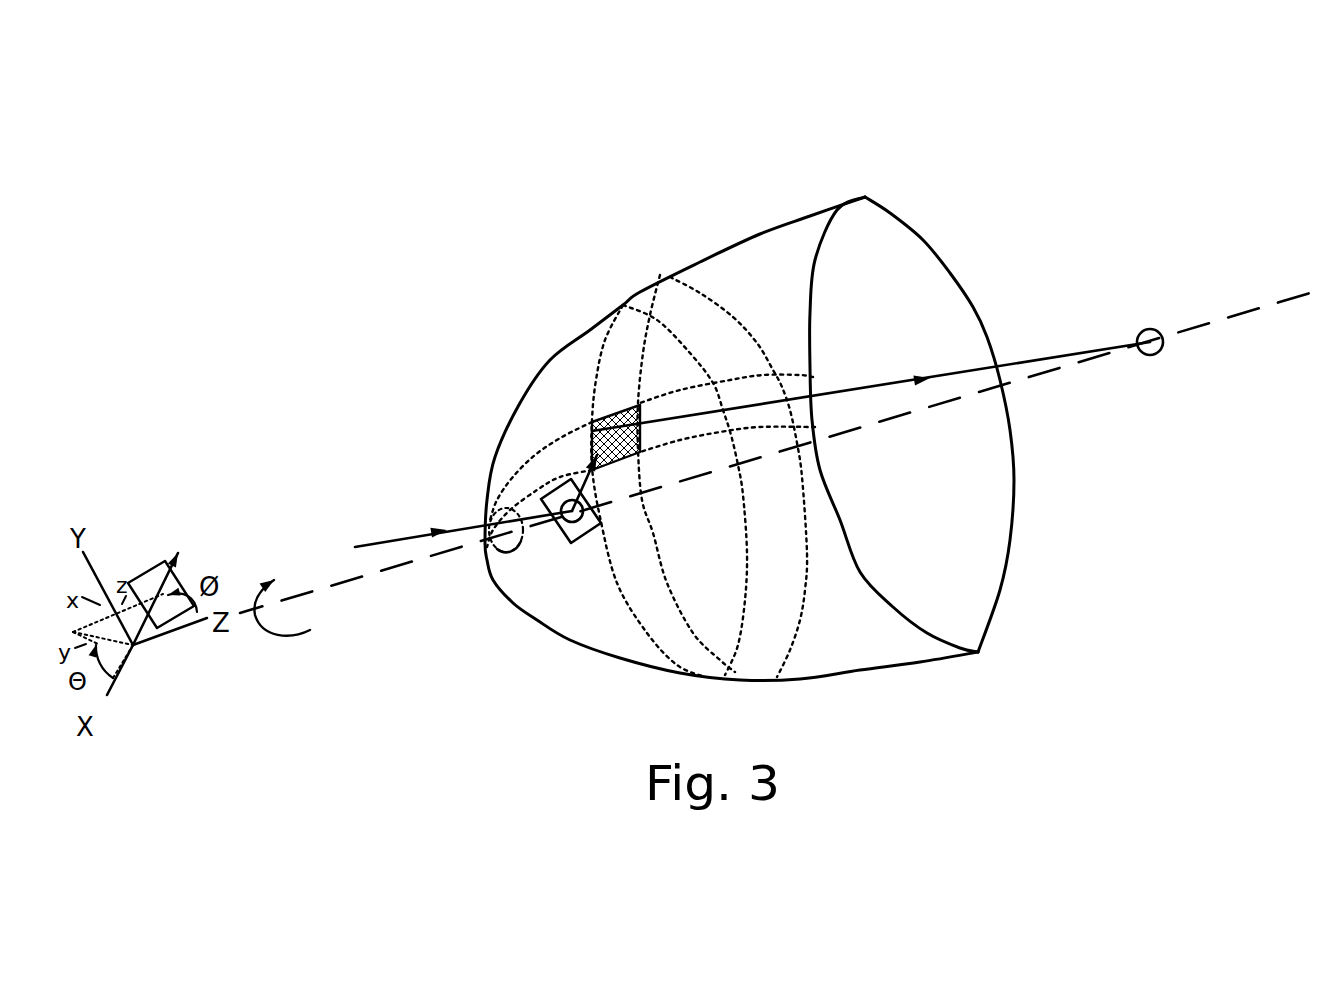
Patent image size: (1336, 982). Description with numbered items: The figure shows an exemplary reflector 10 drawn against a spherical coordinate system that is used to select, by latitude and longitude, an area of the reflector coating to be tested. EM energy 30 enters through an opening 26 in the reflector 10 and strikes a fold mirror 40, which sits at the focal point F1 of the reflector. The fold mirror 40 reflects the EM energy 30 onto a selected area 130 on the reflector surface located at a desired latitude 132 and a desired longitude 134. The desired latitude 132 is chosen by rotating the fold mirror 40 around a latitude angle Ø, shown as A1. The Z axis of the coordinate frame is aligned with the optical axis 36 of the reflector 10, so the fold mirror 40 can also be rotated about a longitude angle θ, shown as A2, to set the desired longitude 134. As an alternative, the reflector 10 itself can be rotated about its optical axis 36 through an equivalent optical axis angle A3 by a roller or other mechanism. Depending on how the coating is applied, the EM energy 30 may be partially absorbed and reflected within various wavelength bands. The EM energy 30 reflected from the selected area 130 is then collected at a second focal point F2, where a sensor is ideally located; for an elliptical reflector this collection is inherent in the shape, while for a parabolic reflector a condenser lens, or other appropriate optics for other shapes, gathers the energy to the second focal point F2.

The reflector 10 is at (945, 200).
The opening 26 is at (508, 517).
The EM energy 30 is at (418, 537).
The optical axis 36 is at (1190, 328).
The fold mirror 40 is at (558, 532).
The selected area 130 is at (593, 422).
The desired latitude 132 is at (646, 304).
The desired longitude 134 is at (795, 388).
The focal point F1 is at (568, 539).
The second focal point F2 is at (1149, 362).
The latitude angle A1 is at (213, 580).
The longitude angle A2 is at (69, 681).
The optical axis angle A3 is at (282, 633).